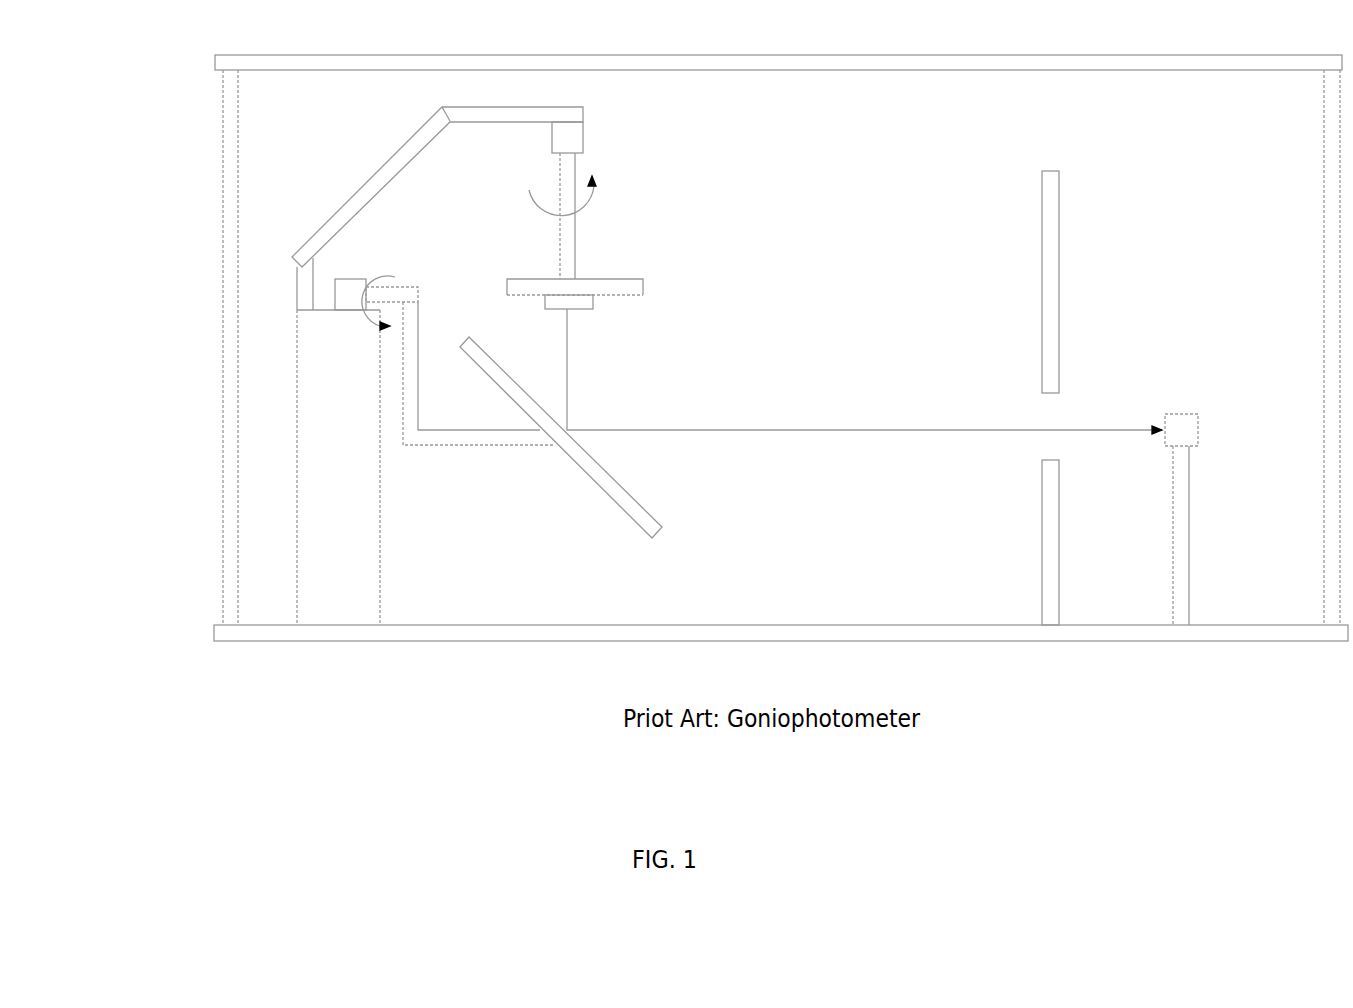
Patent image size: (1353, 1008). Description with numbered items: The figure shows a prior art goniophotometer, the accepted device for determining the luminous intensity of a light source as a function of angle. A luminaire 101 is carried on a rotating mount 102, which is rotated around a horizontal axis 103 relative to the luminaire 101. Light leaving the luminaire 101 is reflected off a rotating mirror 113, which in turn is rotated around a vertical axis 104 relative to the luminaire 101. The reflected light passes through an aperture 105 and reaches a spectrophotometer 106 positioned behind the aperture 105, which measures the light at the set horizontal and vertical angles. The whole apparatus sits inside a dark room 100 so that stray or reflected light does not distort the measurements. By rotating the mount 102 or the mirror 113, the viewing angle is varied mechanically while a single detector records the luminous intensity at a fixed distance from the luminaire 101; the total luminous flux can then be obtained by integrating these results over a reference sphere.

The dark room 100 is at (213, 535).
The luminaire 101 is at (592, 321).
The rotating mount 102 is at (588, 262).
The horizontal axis 103 is at (596, 168).
The vertical axis 104 is at (360, 331).
The aperture 105 is at (1022, 416).
The spectrophotometer 106 is at (1142, 408).
The rotating mirror 113 is at (802, 490).